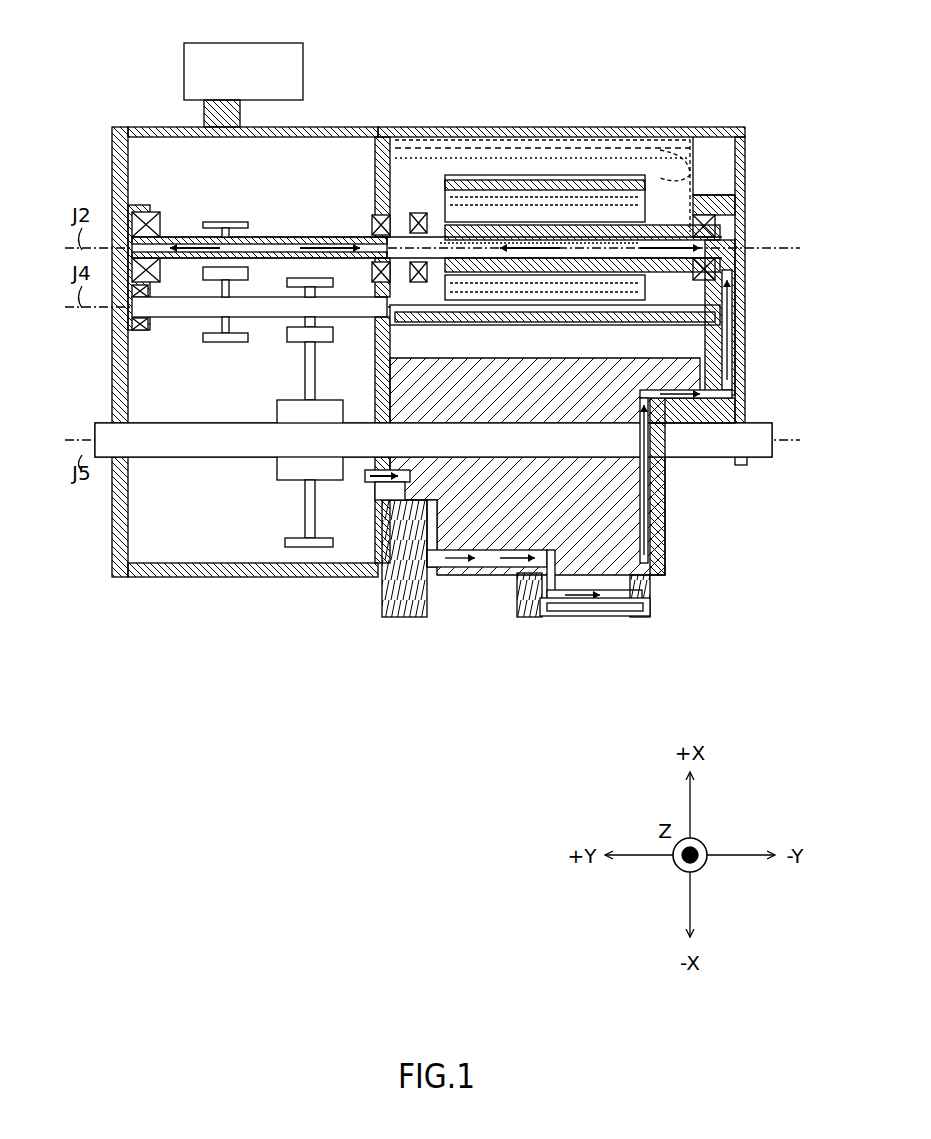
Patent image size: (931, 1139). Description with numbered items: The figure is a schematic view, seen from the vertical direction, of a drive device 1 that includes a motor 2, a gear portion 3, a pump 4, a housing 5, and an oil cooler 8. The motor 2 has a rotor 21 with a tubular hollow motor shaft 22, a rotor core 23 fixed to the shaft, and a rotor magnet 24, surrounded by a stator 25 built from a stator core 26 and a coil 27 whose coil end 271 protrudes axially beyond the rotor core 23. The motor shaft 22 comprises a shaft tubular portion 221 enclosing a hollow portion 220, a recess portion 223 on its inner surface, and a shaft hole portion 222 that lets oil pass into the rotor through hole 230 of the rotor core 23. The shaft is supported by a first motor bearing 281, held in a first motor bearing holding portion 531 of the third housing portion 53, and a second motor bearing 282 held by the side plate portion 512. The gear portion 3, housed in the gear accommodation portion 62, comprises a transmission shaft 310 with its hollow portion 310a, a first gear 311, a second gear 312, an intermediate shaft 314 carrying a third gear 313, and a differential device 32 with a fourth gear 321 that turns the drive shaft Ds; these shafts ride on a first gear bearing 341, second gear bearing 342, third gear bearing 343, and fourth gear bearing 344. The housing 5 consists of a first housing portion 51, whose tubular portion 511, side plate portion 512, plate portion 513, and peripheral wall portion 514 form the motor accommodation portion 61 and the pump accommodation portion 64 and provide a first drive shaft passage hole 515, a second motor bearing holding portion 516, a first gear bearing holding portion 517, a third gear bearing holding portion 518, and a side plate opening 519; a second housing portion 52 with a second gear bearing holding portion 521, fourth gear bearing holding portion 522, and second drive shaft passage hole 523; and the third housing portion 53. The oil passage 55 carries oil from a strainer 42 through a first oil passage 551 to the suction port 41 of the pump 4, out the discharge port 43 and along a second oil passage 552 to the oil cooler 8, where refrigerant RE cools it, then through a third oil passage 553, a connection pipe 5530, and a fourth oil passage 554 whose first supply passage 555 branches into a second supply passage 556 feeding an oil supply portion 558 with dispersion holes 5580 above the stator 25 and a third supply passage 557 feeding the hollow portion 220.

The drive device 1 is at (125, 78).
The motor 2 is at (630, 235).
The gear portion 3 is at (268, 188).
The pump 4 is at (392, 620).
The housing 5 is at (670, 512).
The oil cooler 8 is at (640, 615).
The rotor 21 is at (518, 172).
The motor shaft 22 is at (705, 180).
The rotor core 23 is at (472, 198).
The rotor magnet 24 is at (490, 182).
The stator 25 is at (585, 145).
The stator core 26 is at (597, 140).
The coil 27 is at (665, 150).
The differential device 32 is at (268, 474).
The suction port 41 is at (388, 500).
The strainer 42 is at (368, 480).
The discharge port 43 is at (430, 570).
The first housing portion 51 is at (670, 560).
The second housing portion 52 is at (110, 148).
The third housing portion 53 is at (750, 155).
The oil passage 55 is at (650, 525).
The motor accommodation portion 61 is at (397, 183).
The gear accommodation portion 62 is at (155, 544).
The pump accommodation portion 64 is at (432, 518).
The hollow portion 220 is at (725, 255).
The shaft tubular portion 221 is at (662, 238).
The shaft hole portion 222 is at (560, 278).
The recess portion 223 is at (575, 282).
The rotor through hole 230 is at (565, 205).
The coil end 271 is at (660, 140).
The first motor bearing 281 is at (718, 226).
The second motor bearing 282 is at (418, 212).
The transmission shaft 310 is at (288, 236).
The hollow portion 310a is at (268, 242).
The first gear 311 is at (226, 222).
The second gear 312 is at (232, 344).
The third gear 313 is at (265, 272).
The intermediate shaft 314 is at (178, 318).
The fourth gear 321 is at (303, 520).
The first gear bearing 341 is at (376, 238).
The second gear bearing 342 is at (162, 220).
The third gear bearing 343 is at (333, 300).
The fourth gear bearing 344 is at (150, 292).
The tubular portion 511 is at (440, 125).
The side plate portion 512 is at (376, 150).
The plate portion 513 is at (488, 505).
The peripheral wall portion 514 is at (660, 490).
The first drive shaft passage hole 515 is at (380, 400).
The second motor bearing holding portion 516 is at (380, 192).
The first gear bearing holding portion 517 is at (374, 222).
The third gear bearing holding portion 518 is at (378, 340).
The side plate opening 519 is at (378, 360).
The second gear bearing holding portion 521 is at (145, 210).
The fourth gear bearing holding portion 522 is at (142, 332).
The second drive shaft passage hole 523 is at (120, 428).
The first motor bearing holding portion 531 is at (738, 205).
The first oil passage 551 is at (392, 490).
The second oil passage 552 is at (525, 590).
The third oil passage 553 is at (650, 470).
The fourth oil passage 554 is at (736, 365).
The first supply passage 555 is at (735, 393).
The second supply passage 556 is at (722, 318).
The third supply passage 557 is at (734, 285).
The oil supply portion 558 is at (605, 325).
The connection pipe 5530 is at (730, 400).
The dispersion holes 5580 is at (515, 324).
The drive shaft Ds is at (768, 455).
The refrigerant RE is at (600, 617).